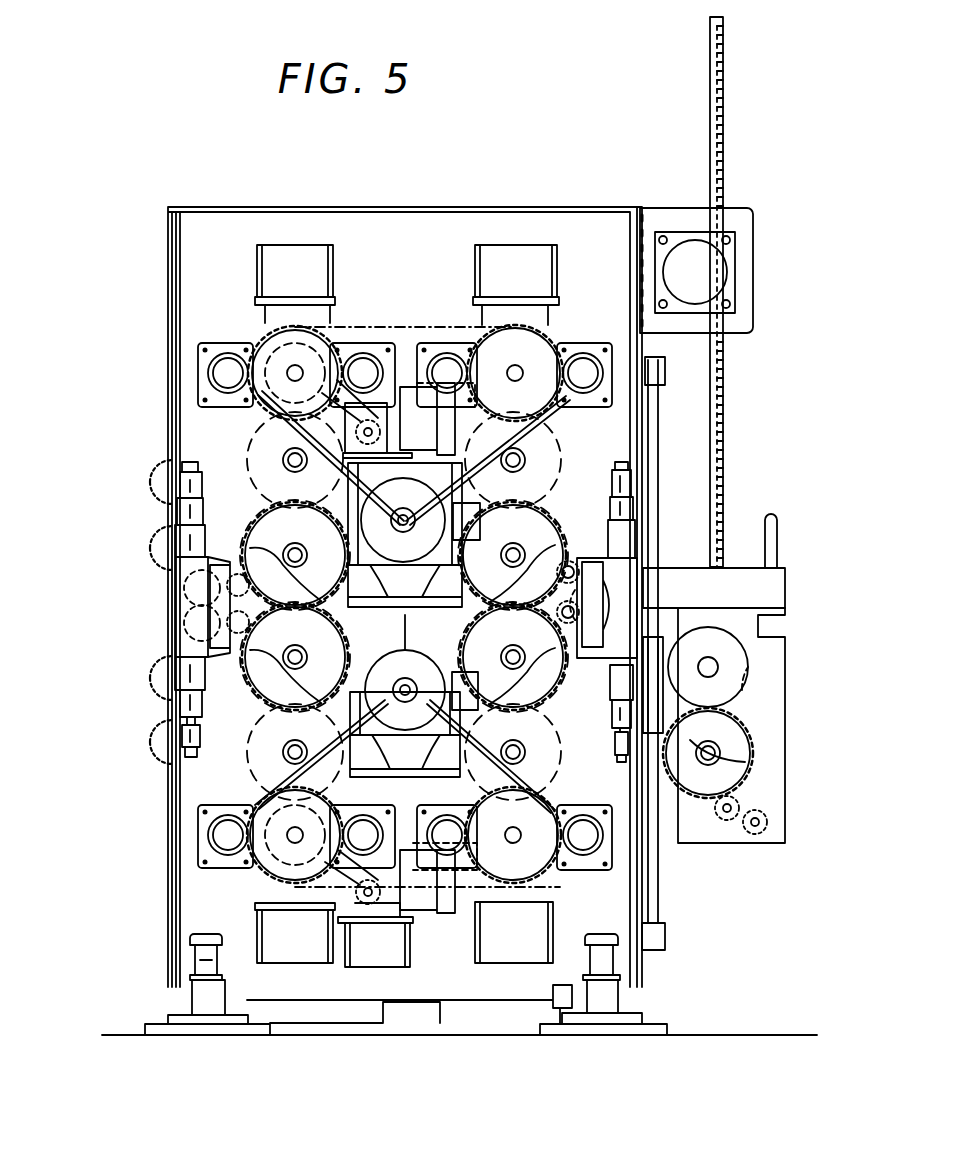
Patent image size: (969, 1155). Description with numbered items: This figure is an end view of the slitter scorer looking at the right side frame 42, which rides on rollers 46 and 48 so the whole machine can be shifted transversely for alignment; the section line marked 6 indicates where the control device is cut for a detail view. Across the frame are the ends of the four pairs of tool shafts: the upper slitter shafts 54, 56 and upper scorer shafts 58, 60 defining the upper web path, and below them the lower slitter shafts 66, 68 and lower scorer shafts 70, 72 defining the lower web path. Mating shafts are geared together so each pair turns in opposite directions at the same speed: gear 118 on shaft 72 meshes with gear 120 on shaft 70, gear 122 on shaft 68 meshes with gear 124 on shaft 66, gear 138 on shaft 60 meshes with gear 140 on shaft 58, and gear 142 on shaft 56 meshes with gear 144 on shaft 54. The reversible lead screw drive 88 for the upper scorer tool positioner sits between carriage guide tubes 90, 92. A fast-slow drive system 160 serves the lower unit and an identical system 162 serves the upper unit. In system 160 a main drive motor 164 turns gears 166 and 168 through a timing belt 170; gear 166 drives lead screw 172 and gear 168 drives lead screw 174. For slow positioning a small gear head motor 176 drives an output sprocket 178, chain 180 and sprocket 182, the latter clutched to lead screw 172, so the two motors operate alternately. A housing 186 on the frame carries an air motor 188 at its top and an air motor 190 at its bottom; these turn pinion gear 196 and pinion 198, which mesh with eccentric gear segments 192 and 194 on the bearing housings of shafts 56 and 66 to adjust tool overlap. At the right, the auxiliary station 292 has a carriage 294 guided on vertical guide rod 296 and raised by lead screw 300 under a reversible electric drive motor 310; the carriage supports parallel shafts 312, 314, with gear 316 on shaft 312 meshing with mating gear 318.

The section line 6- 6 is at (620, 455).
The right side frame 42 is at (459, 621).
The rollers 46 is at (200, 955).
The rollers 48 is at (607, 960).
The upper slitter shaft 54 is at (527, 460).
The upper slitter shaft 56 is at (535, 545).
The upper scorer shaft 58 is at (283, 458).
The upper scorer shaft 60 is at (285, 550).
The lower slitter shaft 66 is at (527, 662).
The lower slitter shaft 68 is at (527, 752).
The lower scorer shaft 70 is at (303, 655).
The lower scorer shaft 72 is at (283, 752).
The reversible lead screw drive 88 is at (292, 368).
The carriage guide tube 90 is at (362, 358).
The carriage guide tube 92 is at (212, 377).
The gear 118 is at (295, 752).
The gear 120 is at (295, 657).
The gear 122 is at (513, 752).
The gear 124 is at (513, 657).
The gear 138 is at (295, 555).
The gear 140 is at (295, 460).
The gear 142 is at (513, 555).
The gear 144 is at (513, 460).
The fast-slow drive system 160 is at (185, 807).
The fast-slow drive system 162 is at (190, 410).
The main drive motor 164 is at (405, 536).
The gear 166 is at (268, 866).
The gear 168 is at (513, 835).
The timing belt 170 is at (405, 731).
The lead screw 172 is at (270, 815).
The lead screw 174 is at (470, 818).
The motor 176 is at (428, 903).
The output sprocket 178 is at (377, 945).
The chain 180 is at (295, 941).
The sprocket 182 is at (340, 812).
The housing 186 is at (630, 588).
The air motor 188 is at (625, 508).
The air motor 190 is at (620, 710).
The gear segment 192 is at (553, 556).
The gear segment 194 is at (410, 660).
The pinion gear 196 is at (580, 575).
The pinion 198 is at (572, 625).
The auxiliary station 292 is at (746, 858).
The carriage 294 is at (770, 712).
The guide rod 296 is at (660, 897).
The lead screw 300 is at (722, 140).
The reversible electric drive motor 310 is at (696, 270).
The shaft 312 is at (708, 660).
The shaft 314 is at (722, 753).
The gear 316 is at (745, 680).
The gear 318 is at (745, 755).